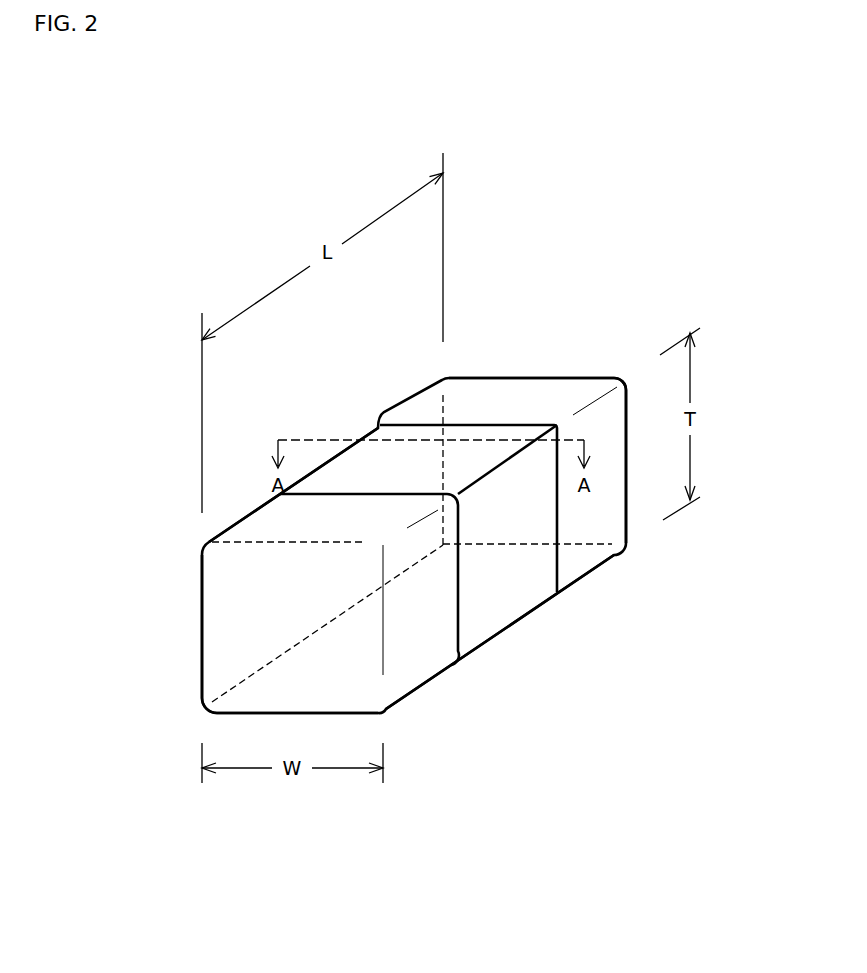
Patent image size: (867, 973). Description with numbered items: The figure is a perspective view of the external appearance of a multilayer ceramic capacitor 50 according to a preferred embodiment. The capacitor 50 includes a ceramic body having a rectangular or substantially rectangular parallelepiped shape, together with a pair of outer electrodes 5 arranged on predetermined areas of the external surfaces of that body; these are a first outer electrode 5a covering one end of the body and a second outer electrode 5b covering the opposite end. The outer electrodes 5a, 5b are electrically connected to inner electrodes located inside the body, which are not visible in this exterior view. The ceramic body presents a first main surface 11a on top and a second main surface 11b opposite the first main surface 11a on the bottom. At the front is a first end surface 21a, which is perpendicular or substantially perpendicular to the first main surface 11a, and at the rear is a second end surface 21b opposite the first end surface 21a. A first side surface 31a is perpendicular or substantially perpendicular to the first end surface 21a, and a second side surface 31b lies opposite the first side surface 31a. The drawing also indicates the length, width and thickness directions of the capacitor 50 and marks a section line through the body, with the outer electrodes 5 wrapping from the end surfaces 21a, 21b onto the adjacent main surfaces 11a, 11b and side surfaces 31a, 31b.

The multilayer ceramic capacitor 50 is at (490, 303).
The outer electrodes 5 is at (484, 599).
The outer electrode 5a is at (405, 645).
The outer electrode 5b is at (602, 500).
The first main surface 11a is at (490, 453).
The second main surface 11b is at (476, 612).
The first end surface 21a is at (247, 633).
The second end surface 21b is at (538, 408).
The first side surface 31a is at (388, 438).
The second side surface 31b is at (507, 560).